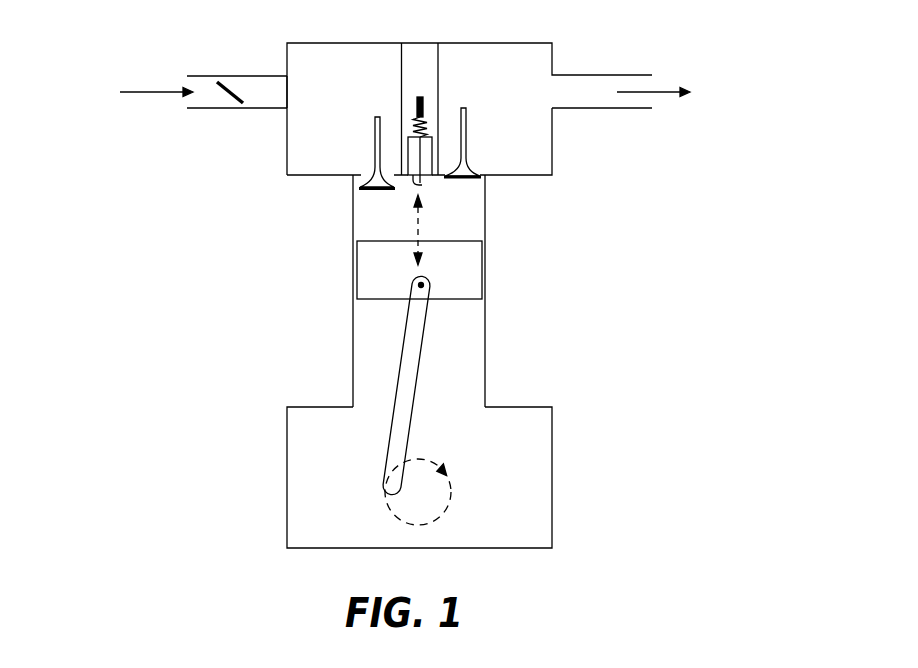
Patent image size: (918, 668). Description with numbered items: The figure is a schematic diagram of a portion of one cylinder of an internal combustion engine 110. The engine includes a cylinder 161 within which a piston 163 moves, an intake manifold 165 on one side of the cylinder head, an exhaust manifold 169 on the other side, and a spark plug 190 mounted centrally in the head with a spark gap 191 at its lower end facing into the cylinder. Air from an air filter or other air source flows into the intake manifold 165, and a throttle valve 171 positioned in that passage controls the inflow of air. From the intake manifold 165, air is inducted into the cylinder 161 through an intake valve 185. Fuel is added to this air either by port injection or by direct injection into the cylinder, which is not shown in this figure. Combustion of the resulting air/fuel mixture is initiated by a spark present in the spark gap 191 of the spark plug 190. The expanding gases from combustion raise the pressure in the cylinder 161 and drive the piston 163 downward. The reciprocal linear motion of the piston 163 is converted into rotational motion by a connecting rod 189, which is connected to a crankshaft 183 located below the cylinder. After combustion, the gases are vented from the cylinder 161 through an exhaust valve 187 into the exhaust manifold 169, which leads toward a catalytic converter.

The internal combustion engine 110 is at (122, 50).
The cylinder 161 is at (485, 357).
The piston 163 is at (482, 278).
The intake manifold 165 is at (287, 137).
The exhaust manifold 169 is at (553, 148).
The throttle valve 171 is at (227, 86).
The crankshaft 183 is at (452, 492).
The intake valve 185 is at (375, 148).
The exhaust valve 187 is at (466, 132).
The connecting rod 189 is at (390, 437).
The spark plug 190 is at (427, 128).
The spark gap 191 is at (423, 183).